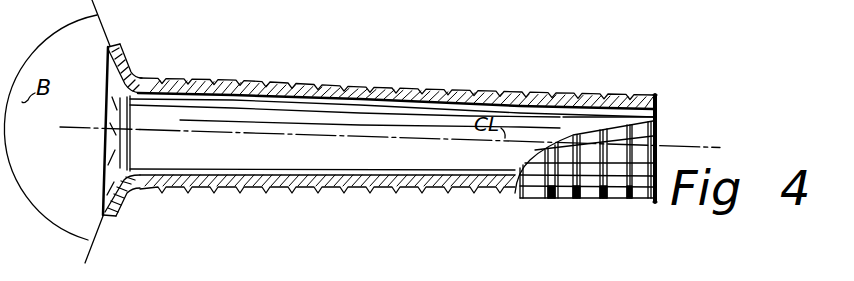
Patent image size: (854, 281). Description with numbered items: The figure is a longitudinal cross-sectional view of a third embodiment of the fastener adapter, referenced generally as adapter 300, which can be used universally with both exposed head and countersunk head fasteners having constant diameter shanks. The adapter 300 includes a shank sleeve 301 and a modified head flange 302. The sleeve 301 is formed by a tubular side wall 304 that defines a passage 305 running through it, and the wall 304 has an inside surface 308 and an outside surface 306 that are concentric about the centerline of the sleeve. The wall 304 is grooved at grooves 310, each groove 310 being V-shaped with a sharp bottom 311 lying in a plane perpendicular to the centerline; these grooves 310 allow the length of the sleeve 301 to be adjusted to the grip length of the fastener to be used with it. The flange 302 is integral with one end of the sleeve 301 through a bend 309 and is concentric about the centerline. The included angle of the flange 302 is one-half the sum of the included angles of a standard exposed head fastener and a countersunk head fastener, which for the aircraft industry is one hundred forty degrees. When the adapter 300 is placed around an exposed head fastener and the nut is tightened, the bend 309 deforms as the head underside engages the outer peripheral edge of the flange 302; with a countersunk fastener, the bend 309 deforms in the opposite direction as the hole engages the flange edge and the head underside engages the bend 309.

The adapter 300 is at (658, 126).
The shank sleeve 301 is at (437, 88).
The head flange 302 is at (123, 58).
The tubular side wall 304 is at (418, 102).
The passage 305 is at (270, 160).
The outside surface 306 is at (354, 87).
The inside surface 308 is at (297, 97).
The bend 309 is at (133, 112).
The groove 310 is at (481, 91).
The sharp bottom 311 is at (567, 107).